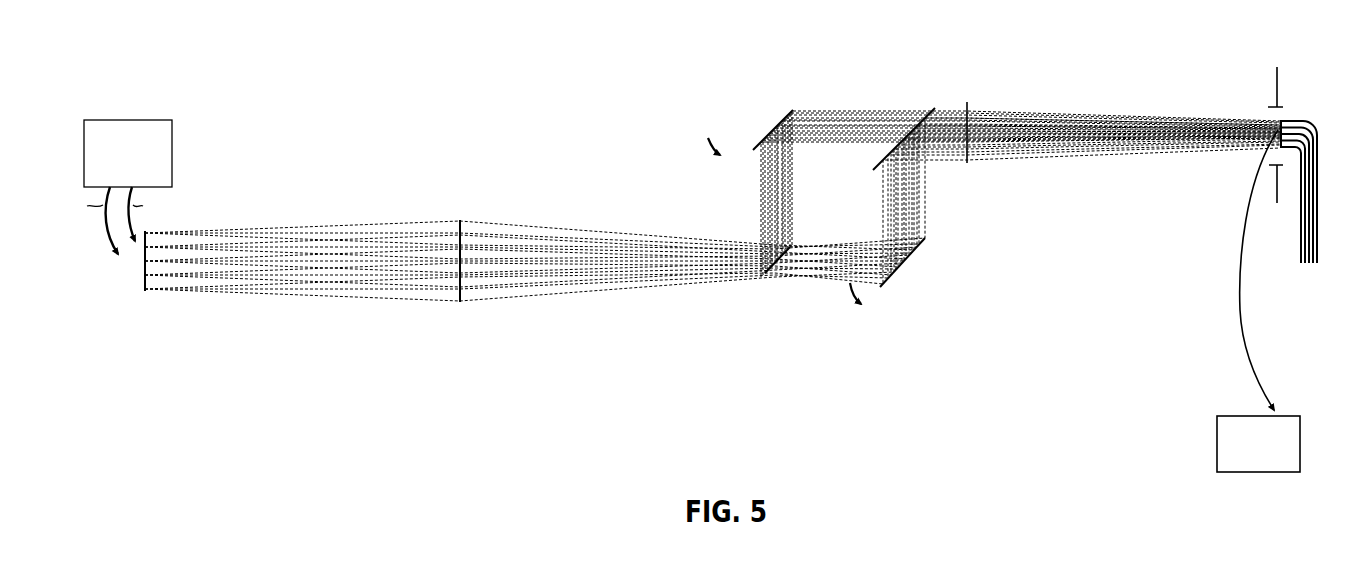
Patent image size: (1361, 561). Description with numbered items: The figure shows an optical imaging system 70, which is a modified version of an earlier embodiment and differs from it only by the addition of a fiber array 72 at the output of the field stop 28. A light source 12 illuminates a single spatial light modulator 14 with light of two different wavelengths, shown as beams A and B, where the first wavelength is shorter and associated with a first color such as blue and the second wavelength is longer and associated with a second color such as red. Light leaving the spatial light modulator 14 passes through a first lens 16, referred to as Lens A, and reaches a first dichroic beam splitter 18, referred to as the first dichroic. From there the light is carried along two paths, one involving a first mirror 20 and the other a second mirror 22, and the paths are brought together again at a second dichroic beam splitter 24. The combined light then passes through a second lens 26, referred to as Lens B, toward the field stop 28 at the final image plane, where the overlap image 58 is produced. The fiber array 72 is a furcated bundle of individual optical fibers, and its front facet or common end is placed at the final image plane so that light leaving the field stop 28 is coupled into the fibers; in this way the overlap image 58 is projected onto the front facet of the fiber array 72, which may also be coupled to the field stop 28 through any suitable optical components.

The optical imaging system 70 is at (470, 42).
The light source 12 is at (130, 121).
The spatial light modulator 14 is at (148, 273).
The first lens 16 is at (458, 220).
The first dichroic beam splitter 18 is at (773, 272).
The first mirror 20 is at (797, 110).
The second mirror 22 is at (907, 262).
The second dichroic beam splitter 24 is at (932, 108).
The second lens 26 is at (967, 102).
The field stop 28 is at (1280, 87).
The fiber array 72 is at (1318, 205).
The overlap image 58 is at (1230, 416).